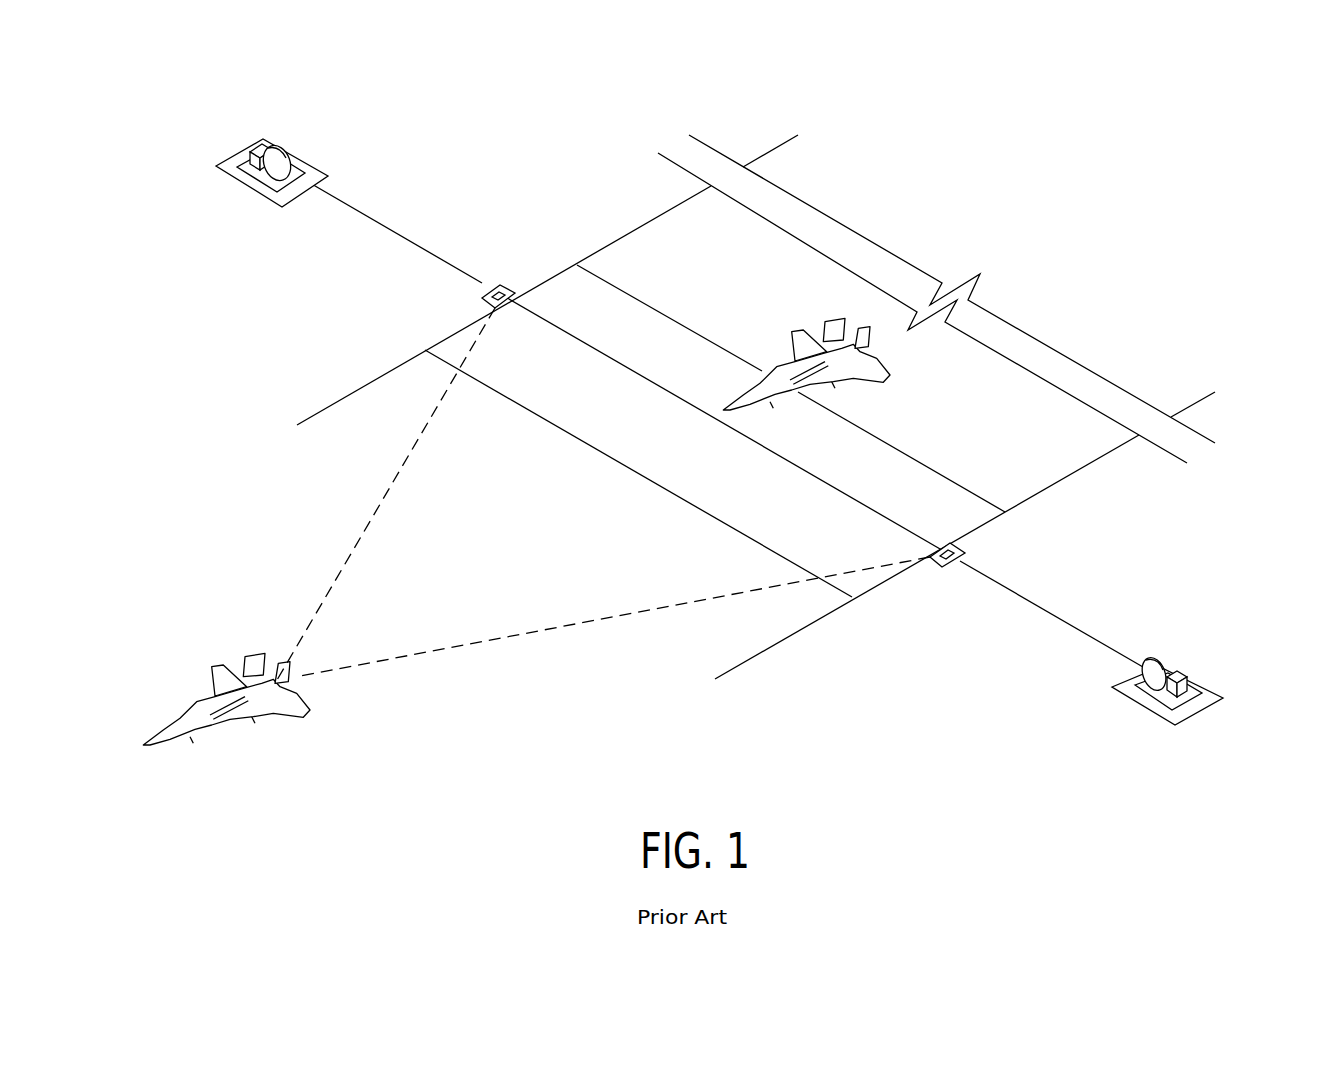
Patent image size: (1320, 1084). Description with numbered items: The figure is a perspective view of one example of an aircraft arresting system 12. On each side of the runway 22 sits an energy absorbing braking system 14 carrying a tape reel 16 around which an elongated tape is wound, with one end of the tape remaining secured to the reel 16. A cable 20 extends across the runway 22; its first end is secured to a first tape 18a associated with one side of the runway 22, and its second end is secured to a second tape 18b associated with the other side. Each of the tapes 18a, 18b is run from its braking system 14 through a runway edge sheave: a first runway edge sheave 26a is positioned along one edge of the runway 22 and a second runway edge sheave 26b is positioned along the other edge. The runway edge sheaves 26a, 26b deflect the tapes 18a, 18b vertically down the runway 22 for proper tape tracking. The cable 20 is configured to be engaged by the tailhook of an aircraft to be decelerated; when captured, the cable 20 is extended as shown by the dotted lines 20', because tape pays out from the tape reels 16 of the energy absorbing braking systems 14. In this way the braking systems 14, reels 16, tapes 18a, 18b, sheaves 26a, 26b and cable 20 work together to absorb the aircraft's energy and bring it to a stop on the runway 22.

The aircraft arresting system 12 is at (1118, 158).
The energy absorbing braking system 14 is at (262, 142).
The tape reel 16 is at (277, 167).
The first tape 18a is at (1043, 607).
The second tape 18b is at (341, 210).
The cable 20 is at (722, 366).
The extended cable 20' is at (598, 494).
The runway 22 is at (985, 445).
The first runway edge sheave 26a is at (950, 567).
The second runway edge sheave 26b is at (482, 298).